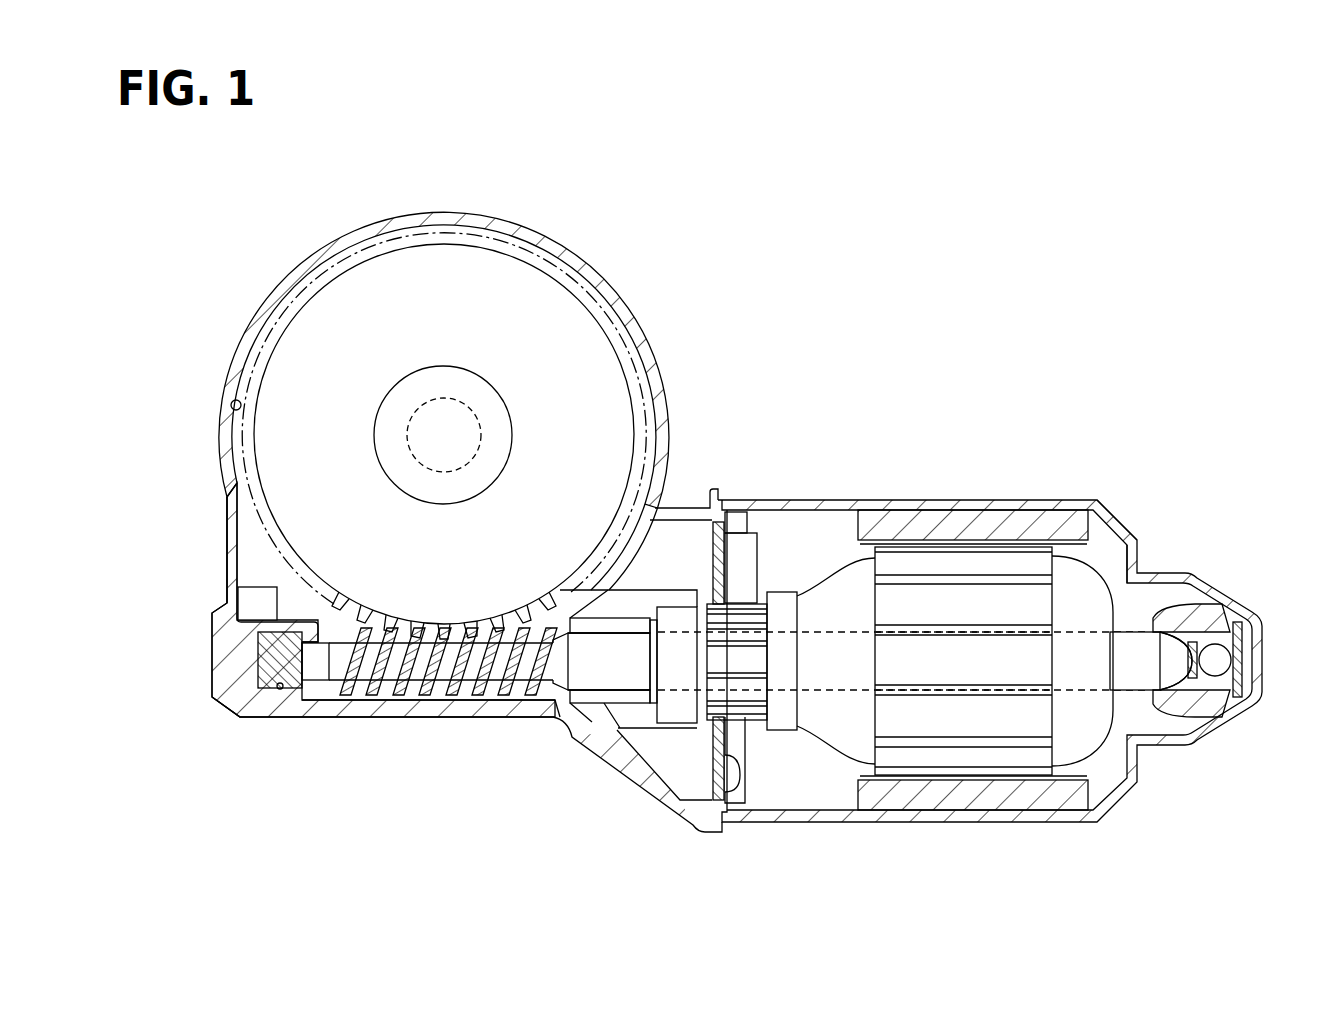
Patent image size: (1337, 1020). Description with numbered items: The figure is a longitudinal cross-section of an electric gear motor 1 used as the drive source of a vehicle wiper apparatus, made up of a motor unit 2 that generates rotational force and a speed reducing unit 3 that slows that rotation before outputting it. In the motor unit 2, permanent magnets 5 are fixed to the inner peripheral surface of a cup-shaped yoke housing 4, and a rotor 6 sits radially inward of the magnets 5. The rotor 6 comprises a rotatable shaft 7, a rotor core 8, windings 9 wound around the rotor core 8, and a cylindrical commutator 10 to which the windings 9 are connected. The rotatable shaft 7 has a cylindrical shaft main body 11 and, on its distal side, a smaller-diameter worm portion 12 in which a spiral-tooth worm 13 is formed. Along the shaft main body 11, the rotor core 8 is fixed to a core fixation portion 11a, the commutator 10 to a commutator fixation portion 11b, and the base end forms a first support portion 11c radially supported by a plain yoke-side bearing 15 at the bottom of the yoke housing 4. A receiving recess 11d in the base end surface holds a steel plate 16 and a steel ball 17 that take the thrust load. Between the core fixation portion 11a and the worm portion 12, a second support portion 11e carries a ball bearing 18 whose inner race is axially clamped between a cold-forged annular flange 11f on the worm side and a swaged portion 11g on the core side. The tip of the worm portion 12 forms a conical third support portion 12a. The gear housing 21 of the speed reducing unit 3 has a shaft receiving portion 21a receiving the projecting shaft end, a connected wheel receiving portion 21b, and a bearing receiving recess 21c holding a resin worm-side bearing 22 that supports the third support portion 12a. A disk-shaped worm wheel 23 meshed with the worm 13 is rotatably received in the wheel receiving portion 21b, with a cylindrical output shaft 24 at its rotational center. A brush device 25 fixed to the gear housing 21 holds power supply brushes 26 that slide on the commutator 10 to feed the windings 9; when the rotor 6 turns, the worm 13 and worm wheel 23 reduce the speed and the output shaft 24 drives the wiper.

The electric motor 1 is at (1052, 321).
The motor unit 2 is at (1104, 496).
The speed reducing unit 3 is at (615, 280).
The yoke housing 4 is at (816, 507).
The permanent magnets 5 is at (913, 516).
The rotor 6 is at (1100, 566).
The rotatable shaft 7 is at (600, 630).
The rotor core 8 is at (975, 560).
The windings 9 is at (850, 740).
The commutator 10 is at (760, 626).
The shaft main body 11 is at (612, 704).
The core fixation portion 11a is at (931, 694).
The commutator fixation portion 11b is at (752, 694).
The first support portion 11c is at (1213, 712).
The receiving recess 11d is at (1252, 628).
The second support portion 11e is at (676, 615).
The flange 11f is at (648, 658).
The swaged portion 11g is at (722, 659).
The worm portion 12 is at (532, 694).
The third support portion 12a is at (323, 678).
The worm 13 is at (437, 698).
The yoke-side bearing 15 is at (1203, 613).
The steel plate 16 is at (1190, 661).
The steel ball 17 is at (1232, 657).
The ball bearing 18 is at (674, 724).
The gear housing 21 is at (670, 405).
The shaft receiving portion 21a is at (478, 708).
The wheel receiving portion 21b is at (233, 400).
The bearing receiving recess 21c is at (280, 690).
The worm-side bearing 22 is at (262, 658).
The worm wheel 23 is at (599, 351).
The output shaft 24 is at (441, 397).
The brush device 25 is at (736, 520).
The power supply brushes 26 is at (751, 561).